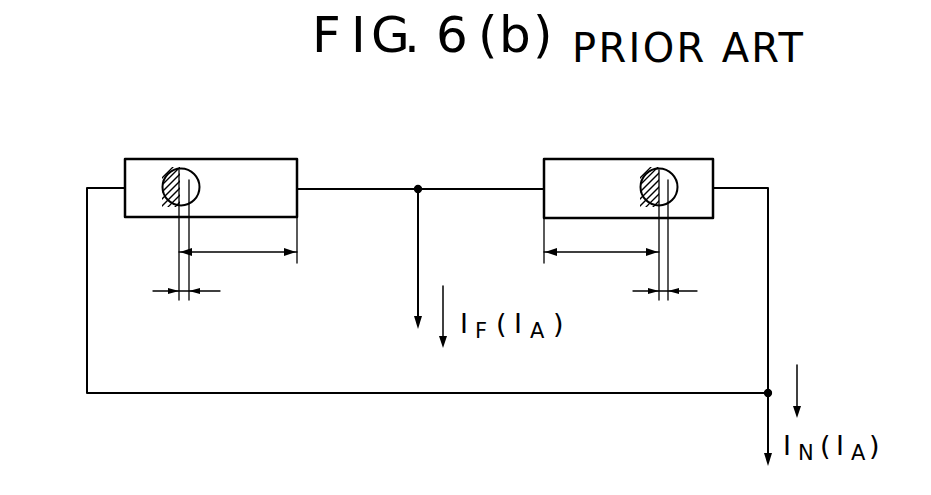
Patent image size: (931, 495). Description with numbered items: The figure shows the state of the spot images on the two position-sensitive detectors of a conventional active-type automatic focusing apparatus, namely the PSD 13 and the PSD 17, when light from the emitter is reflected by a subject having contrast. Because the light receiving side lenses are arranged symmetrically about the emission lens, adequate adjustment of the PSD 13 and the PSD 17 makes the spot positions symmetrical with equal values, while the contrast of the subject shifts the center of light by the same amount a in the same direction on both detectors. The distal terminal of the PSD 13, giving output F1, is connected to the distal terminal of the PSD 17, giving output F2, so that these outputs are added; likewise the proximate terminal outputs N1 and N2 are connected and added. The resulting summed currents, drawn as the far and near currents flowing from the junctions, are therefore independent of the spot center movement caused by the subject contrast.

The PSD 13 is at (639, 204).
The PSD 17 is at (211, 204).
The output from proximate terminal N1 is at (724, 136).
The output from distal terminal of PSD 13 F1 is at (552, 136).
The output from proximate terminal of PSD 17 N2 is at (121, 135).
The output from distal terminal of PSD 17 F2 is at (303, 135).